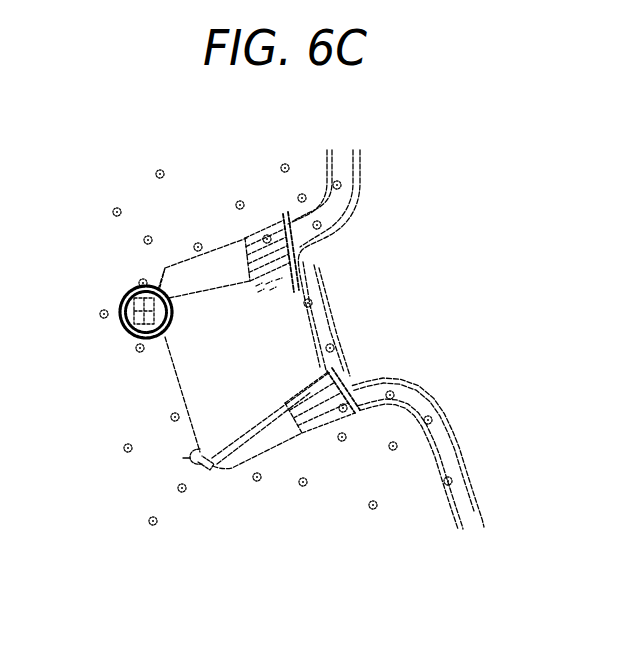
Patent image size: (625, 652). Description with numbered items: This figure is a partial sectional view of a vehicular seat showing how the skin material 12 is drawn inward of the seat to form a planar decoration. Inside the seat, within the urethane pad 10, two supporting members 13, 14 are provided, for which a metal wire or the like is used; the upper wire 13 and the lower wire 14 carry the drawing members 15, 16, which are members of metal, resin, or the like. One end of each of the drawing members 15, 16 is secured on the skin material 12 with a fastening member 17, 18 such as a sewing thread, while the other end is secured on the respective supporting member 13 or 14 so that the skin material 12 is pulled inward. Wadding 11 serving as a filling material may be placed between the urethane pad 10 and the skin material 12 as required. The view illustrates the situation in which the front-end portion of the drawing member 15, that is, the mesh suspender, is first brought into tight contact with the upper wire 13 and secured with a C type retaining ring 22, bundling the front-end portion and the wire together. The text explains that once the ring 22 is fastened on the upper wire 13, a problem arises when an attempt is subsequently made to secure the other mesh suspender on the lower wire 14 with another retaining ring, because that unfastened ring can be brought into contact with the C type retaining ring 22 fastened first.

The urethane pad 10 is at (423, 518).
The wadding 11 is at (472, 518).
The skin material 12 is at (456, 492).
The supporting member 13 is at (124, 327).
The supporting member 14 is at (188, 458).
The drawing member 15 is at (188, 295).
The drawing member 16 is at (245, 427).
The fastening member 17 is at (293, 236).
The fastening member 18 is at (358, 392).
The C type retaining ring 22 is at (120, 300).